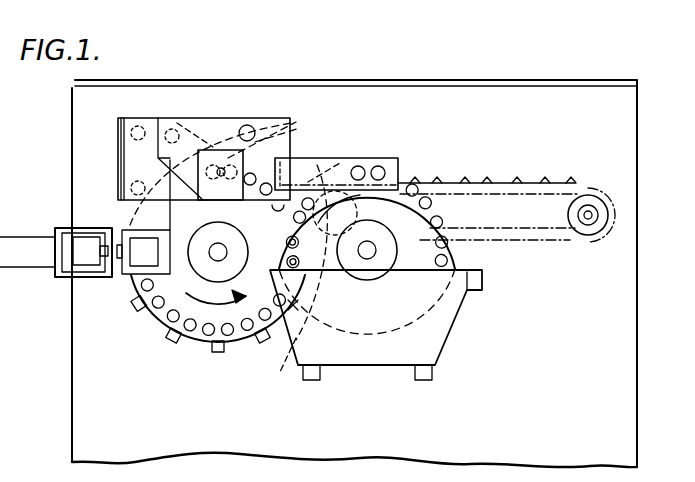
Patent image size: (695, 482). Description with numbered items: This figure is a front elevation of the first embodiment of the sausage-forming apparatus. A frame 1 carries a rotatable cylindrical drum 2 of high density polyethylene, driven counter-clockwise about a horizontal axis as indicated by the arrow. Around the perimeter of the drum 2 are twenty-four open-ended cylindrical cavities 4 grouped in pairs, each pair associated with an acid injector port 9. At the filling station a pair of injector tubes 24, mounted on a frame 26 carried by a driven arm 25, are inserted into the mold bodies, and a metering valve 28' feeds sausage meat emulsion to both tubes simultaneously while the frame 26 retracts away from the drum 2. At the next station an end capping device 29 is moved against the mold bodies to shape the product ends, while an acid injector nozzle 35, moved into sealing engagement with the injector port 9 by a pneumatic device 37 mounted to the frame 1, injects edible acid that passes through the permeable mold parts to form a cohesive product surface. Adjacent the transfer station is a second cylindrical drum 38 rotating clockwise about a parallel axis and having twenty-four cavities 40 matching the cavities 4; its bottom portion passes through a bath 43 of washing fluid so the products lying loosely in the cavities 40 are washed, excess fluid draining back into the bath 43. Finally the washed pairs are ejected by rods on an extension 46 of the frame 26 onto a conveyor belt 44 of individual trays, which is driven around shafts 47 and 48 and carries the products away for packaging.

The frame 1 is at (628, 122).
The rotatable cylindrical drum 2 is at (150, 320).
The cavities 4 is at (196, 333).
The acid injector port 9 is at (137, 308).
The injector tubes 24 is at (348, 130).
The arm 25 is at (252, 128).
The frame 26 is at (222, 127).
The metering valve 28' is at (199, 120).
The end capping device 29 is at (122, 236).
The acid injector nozzle 35 is at (87, 262).
The pneumatic device 37 is at (22, 247).
The second cylindrical drum 38 is at (403, 167).
The cavities 40 is at (450, 260).
The bath 43 is at (435, 340).
The conveyor belt 44 is at (465, 186).
The extension 46 is at (336, 145).
The shaft 47 is at (268, 368).
The shaft 48 is at (588, 212).